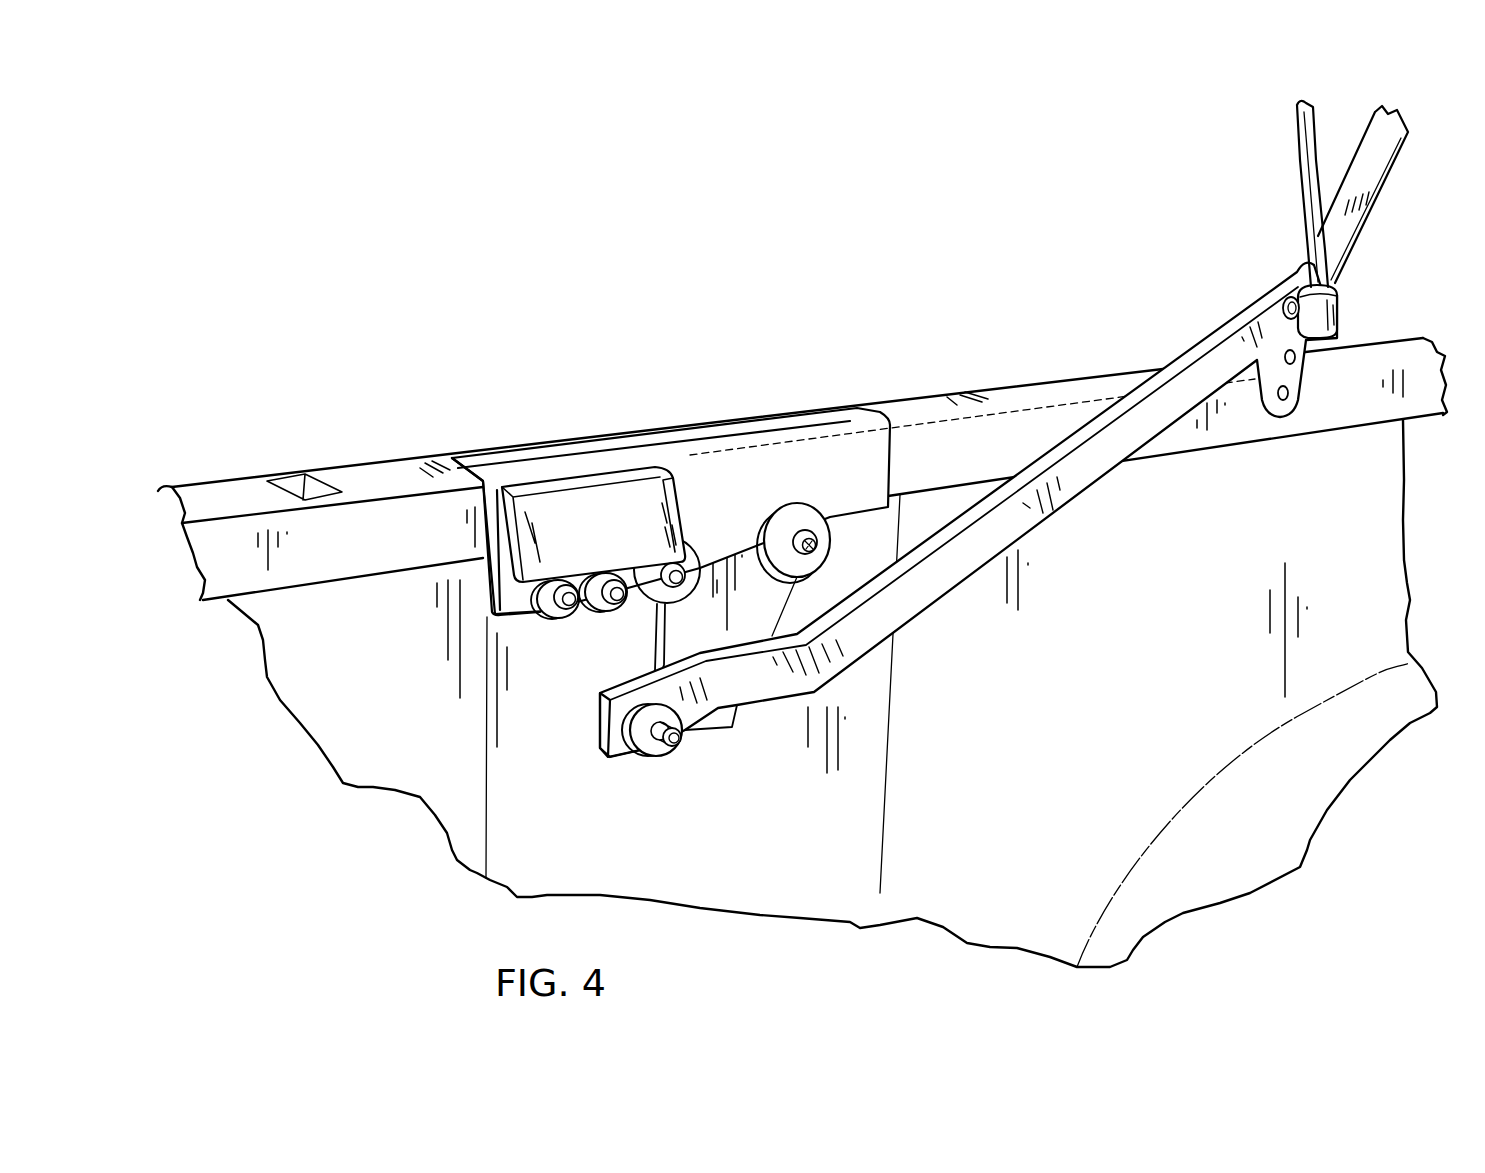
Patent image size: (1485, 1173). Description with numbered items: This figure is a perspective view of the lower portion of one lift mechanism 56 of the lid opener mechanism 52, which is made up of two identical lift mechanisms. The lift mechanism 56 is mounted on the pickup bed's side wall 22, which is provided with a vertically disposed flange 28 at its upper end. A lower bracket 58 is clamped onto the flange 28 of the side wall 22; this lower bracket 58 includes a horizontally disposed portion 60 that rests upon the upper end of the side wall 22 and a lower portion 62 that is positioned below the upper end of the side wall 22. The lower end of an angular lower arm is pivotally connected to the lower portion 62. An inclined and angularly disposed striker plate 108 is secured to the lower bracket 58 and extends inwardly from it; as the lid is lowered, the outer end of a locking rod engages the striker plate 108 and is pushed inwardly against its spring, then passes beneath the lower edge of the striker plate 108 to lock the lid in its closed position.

The side wall 22 is at (963, 607).
The flange 28 is at (1353, 392).
The lid opener mechanism 52 is at (1195, 142).
The lift mechanism 56 is at (1240, 296).
The lower bracket 58 is at (728, 480).
The horizontally disposed portion 60 is at (553, 462).
The lower portion 62 is at (597, 728).
The striker plate 108 is at (610, 540).